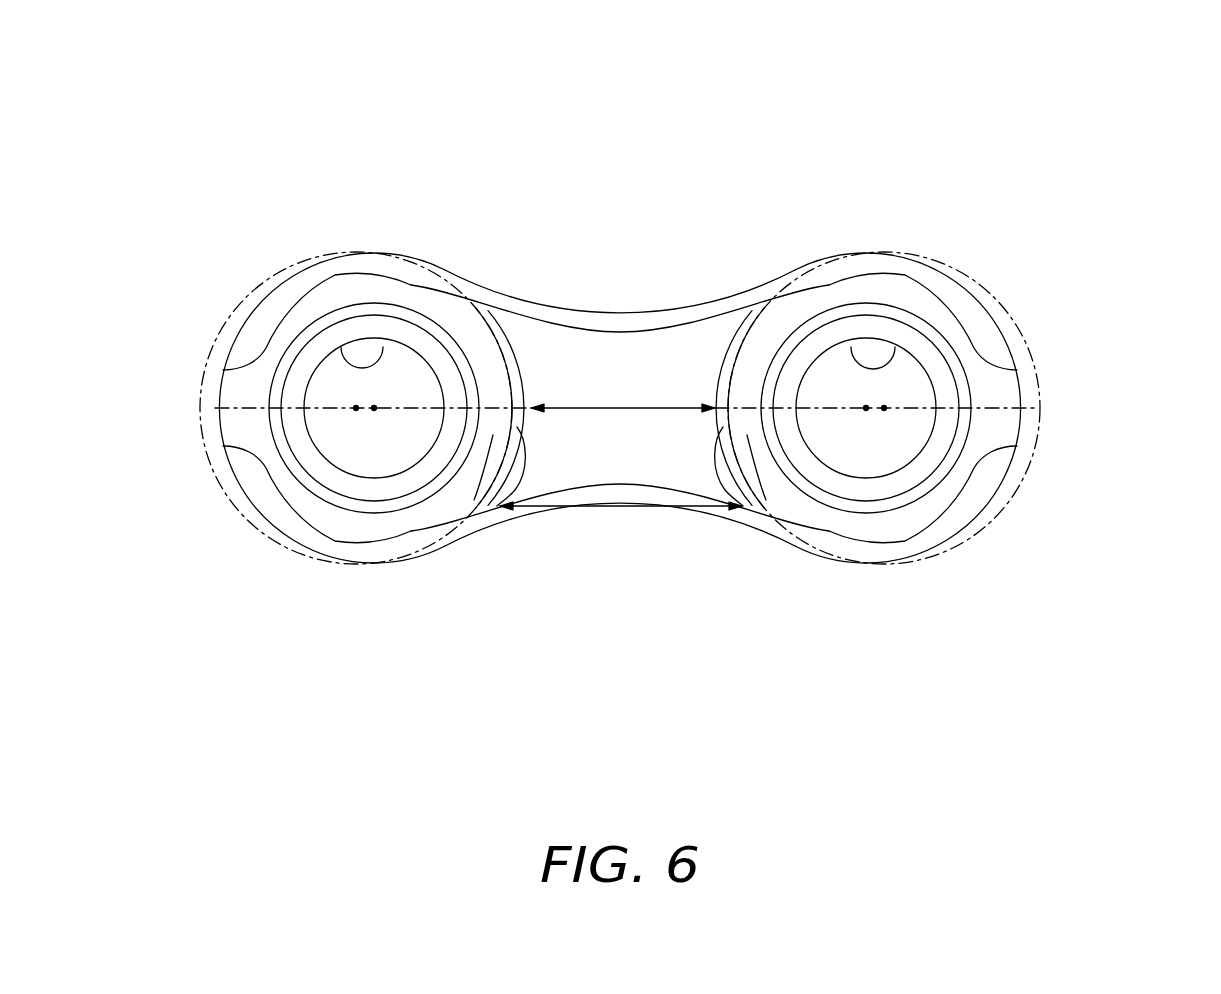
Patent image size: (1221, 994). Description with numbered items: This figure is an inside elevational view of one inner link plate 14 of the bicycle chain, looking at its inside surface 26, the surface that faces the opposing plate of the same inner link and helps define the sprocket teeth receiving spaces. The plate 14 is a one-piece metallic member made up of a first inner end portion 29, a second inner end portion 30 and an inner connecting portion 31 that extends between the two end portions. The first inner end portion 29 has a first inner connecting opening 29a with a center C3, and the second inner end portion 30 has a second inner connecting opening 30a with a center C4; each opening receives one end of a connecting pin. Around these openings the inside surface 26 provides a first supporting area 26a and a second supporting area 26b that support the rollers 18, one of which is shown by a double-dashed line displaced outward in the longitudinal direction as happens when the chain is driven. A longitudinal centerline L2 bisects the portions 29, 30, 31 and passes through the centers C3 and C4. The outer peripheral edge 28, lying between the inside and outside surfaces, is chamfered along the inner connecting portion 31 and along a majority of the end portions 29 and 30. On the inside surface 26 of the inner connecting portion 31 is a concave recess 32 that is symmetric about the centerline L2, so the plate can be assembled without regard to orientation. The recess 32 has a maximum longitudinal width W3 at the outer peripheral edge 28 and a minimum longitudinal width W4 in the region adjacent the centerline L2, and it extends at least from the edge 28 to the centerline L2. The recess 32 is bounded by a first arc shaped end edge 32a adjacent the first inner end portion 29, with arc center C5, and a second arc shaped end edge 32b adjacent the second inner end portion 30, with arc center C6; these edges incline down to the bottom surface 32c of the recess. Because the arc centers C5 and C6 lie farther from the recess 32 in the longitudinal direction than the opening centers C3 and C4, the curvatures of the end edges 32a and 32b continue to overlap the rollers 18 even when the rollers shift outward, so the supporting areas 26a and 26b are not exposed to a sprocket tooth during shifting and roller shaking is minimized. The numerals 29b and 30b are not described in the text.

The inner link plate 14 is at (638, 258).
The roller 18 is at (233, 310).
The inside surface 26 is at (787, 313).
The first supporting area 26a is at (373, 409).
The second supporting area 26b is at (866, 409).
The outer peripheral edge 28 is at (690, 303).
The first inner end portion 29 is at (308, 283).
The first inner connecting opening 29a is at (384, 347).
The first chamfer 29b is at (413, 323).
The second inner end portion 30 is at (933, 277).
The second inner connecting opening 30a is at (848, 337).
The second chamfer 30b is at (955, 322).
The inner connecting portion 31 is at (569, 292).
The concave recess 32 is at (587, 450).
The first arc shaped end edge 32a is at (427, 548).
The second arc shaped end edge 32b is at (820, 557).
The bottom surface 32c is at (642, 458).
The center of first inner connecting opening C3 is at (356, 408).
The center of second inner connecting opening C4 is at (884, 408).
The arc center of first arc shaped end edge C5 is at (262, 523).
The arc center of second arc shaped end edge C6 is at (992, 520).
The longitudinal centerline L2 is at (1030, 360).
The maximum longitudinal width W3 is at (607, 505).
The minimum longitudinal width W4 is at (627, 407).